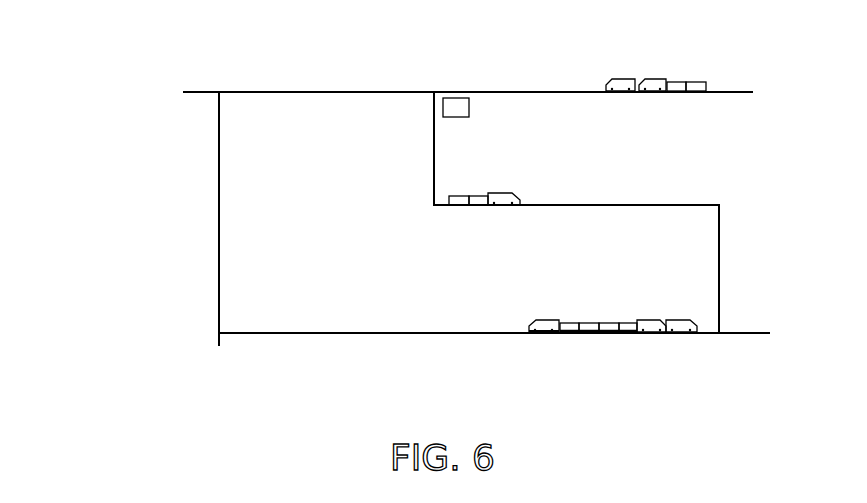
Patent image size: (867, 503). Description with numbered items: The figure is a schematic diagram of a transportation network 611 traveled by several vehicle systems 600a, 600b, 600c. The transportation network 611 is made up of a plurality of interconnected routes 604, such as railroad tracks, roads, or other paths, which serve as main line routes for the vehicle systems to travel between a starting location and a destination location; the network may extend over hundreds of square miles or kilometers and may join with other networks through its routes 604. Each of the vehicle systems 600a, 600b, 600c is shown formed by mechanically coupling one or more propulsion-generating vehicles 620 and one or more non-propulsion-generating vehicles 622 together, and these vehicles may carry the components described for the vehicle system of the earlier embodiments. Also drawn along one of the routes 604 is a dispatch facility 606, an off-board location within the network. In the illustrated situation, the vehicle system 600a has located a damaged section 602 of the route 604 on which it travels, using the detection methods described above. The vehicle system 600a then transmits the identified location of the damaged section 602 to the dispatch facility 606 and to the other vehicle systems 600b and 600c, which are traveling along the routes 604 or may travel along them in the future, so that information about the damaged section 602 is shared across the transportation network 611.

The route 604 is at (557, 93).
The dispatch facility 606 is at (455, 117).
The transportation network 611 is at (166, 245).
The propulsion-generating vehicle 620 is at (624, 79).
The non-propulsion-generating vehicle 622 is at (700, 82).
The damaged section 602 is at (553, 334).
The vehicle system 600a is at (697, 348).
The vehicle system 600b is at (523, 217).
The vehicle system 600c is at (706, 98).